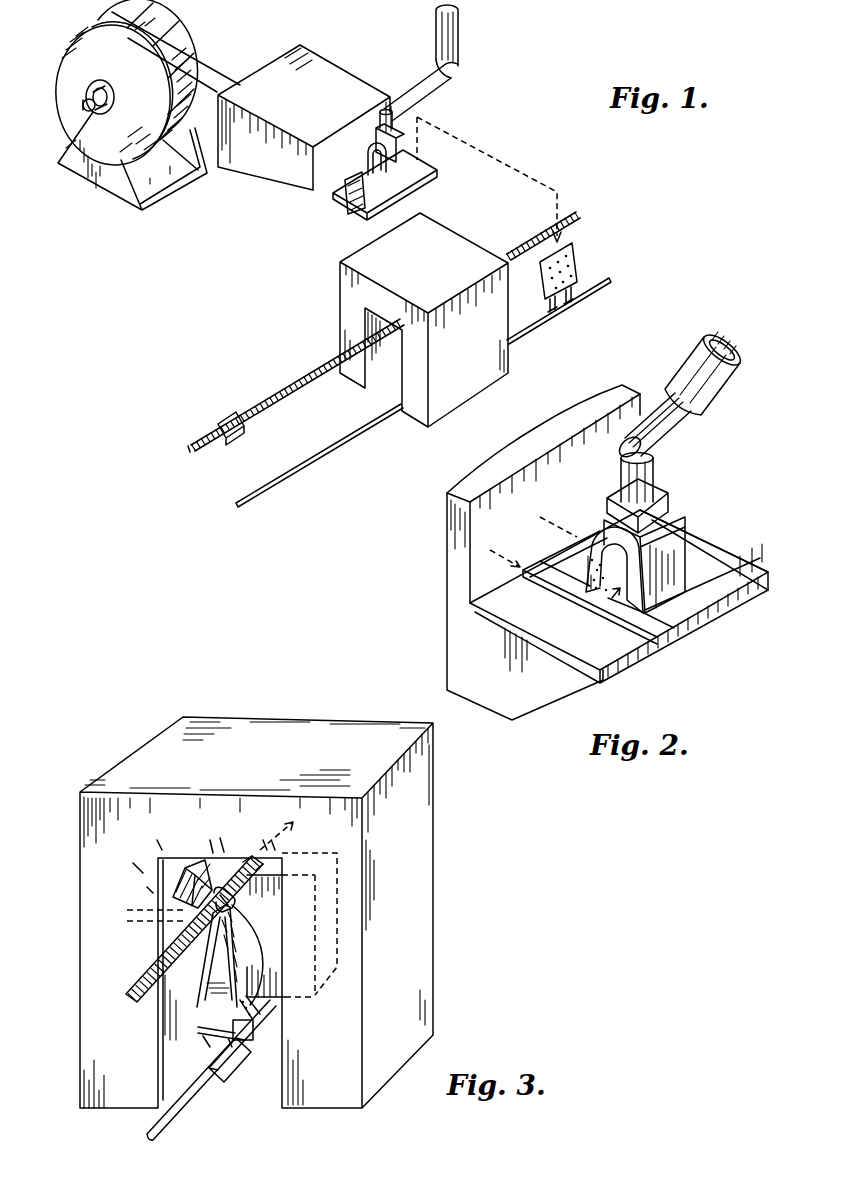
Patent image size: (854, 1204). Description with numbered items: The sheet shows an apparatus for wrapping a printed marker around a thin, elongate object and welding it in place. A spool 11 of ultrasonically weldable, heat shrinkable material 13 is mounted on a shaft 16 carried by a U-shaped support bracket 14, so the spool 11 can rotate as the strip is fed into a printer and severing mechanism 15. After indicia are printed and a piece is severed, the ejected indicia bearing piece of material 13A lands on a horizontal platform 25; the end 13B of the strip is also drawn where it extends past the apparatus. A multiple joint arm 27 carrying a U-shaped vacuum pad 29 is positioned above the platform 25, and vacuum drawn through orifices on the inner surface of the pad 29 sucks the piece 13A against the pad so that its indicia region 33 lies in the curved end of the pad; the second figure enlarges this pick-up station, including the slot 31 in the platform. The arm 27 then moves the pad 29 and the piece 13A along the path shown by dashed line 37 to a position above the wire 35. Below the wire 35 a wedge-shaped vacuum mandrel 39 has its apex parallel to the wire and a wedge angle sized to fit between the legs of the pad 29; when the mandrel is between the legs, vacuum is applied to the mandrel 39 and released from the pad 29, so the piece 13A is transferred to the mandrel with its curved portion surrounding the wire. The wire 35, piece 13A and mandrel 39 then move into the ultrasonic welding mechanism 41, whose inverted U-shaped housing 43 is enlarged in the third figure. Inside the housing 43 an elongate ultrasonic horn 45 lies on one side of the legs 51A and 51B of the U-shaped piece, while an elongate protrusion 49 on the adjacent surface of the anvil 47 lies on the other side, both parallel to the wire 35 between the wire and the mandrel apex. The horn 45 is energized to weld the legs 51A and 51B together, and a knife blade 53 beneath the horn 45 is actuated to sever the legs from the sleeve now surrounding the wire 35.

In FIG. 1, the spool 11 is at (172, 24).
In FIG. 1, the ultrasonically weldable, heat shrinkable material 13 is at (222, 67).
In FIG. 1, the indicia bearing piece of material 13A is at (350, 193).
In FIG. 2, the indicia bearing piece of material 13A is at (663, 627).
In FIG. 3, the indicia bearing piece of material 13A is at (237, 857).
In FIG. 1, the cable second end 13B is at (235, 420).
In FIG. 1, the U-shaped support bracket 14 is at (160, 187).
In FIG. 1, the printer and severing mechanism 15 is at (331, 62).
In FIG. 1, the shaft 16 is at (83, 103).
In FIG. 1, the horizontal platform 25 is at (328, 187).
In FIG. 2, the horizontal platform 25 is at (497, 603).
In FIG. 1, the multiple joint arm 27 is at (466, 85).
In FIG. 2, the multiple joint arm 27 is at (723, 413).
In FIG. 1, the U-shaped vacuum pad 29 is at (413, 160).
In FIG. 2, the U-shaped vacuum pad 29 is at (667, 557).
In FIG. 2, the slot 31 is at (567, 595).
In FIG. 2, the indicia region 33 is at (620, 587).
In FIG. 1, the wire 35 is at (517, 250).
In FIG. 3, the wire 35 is at (143, 977).
In FIG. 1, the dashed line 37 is at (515, 163).
In FIG. 1, the wedge-shaped vacuum mandrel 39 is at (577, 260).
In FIG. 3, the wedge-shaped vacuum mandrel 39 is at (203, 1070).
In FIG. 1, the ultrasonic welding mechanism 41 is at (524, 368).
In FIG. 1, the inverted U-shaped housing 43 is at (347, 290).
In FIG. 3, the inverted U-shaped housing 43 is at (227, 733).
In FIG. 3, the ultrasonic horn 45 is at (188, 860).
In FIG. 3, the anvil 47 is at (270, 890).
In FIG. 3, the elongate protrusion 49 is at (236, 908).
In FIG. 3, the leg 51A is at (203, 950).
In FIG. 3, the leg 51B is at (258, 1027).
In FIG. 3, the knife blade 53 is at (130, 910).